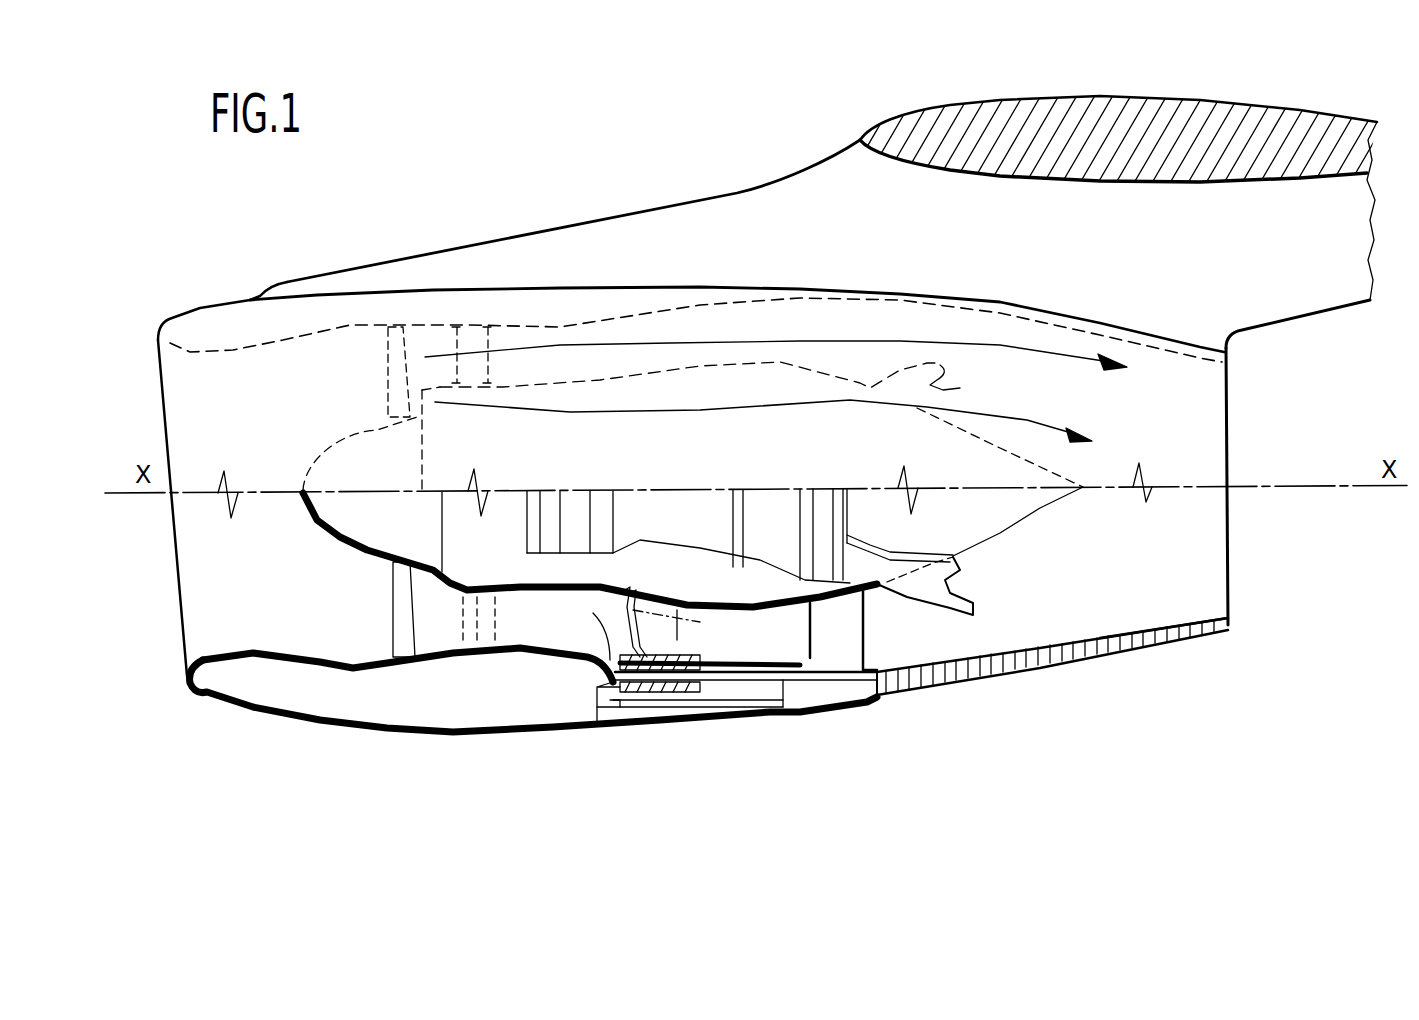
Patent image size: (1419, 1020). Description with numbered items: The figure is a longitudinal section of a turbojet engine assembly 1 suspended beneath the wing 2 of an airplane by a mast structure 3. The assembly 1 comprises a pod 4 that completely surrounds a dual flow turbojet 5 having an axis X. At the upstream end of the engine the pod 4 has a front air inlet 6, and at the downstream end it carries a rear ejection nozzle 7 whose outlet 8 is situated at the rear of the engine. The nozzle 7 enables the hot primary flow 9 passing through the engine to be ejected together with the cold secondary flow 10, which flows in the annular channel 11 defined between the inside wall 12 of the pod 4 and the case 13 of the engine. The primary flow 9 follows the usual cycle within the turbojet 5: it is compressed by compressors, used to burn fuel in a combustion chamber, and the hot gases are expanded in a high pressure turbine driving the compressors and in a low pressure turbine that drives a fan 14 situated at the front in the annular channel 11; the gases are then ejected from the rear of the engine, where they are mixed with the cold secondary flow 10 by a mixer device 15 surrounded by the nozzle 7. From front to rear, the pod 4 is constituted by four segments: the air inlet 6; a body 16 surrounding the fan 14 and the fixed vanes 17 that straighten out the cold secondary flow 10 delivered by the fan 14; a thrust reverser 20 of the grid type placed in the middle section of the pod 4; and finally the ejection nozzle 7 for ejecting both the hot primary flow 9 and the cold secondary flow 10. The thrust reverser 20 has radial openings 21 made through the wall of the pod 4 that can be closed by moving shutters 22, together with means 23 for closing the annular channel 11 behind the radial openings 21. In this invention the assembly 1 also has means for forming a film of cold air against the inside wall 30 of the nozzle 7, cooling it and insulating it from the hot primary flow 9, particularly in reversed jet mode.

The turbojet engine assembly 1 is at (230, 750).
The wing 2 is at (1133, 128).
The mast structure 3 is at (737, 212).
The pod 4 is at (468, 735).
The dual flow turbojet 5 is at (345, 437).
The front air inlet 6 is at (167, 570).
The rear ejection nozzle 7 is at (1095, 657).
The outlet 8 is at (1242, 570).
The hot primary flow 9 is at (562, 412).
The cold secondary flow 10 is at (1060, 350).
The annular channel 11 is at (358, 378).
The inside wall 12 is at (293, 652).
The case 13 is at (776, 369).
The fan 14 is at (403, 600).
The mixer device 15 is at (942, 370).
The body 16 is at (548, 737).
The fixed vanes 17 is at (468, 347).
The thrust reverser 20 is at (732, 738).
The radial openings 21 is at (653, 727).
The moving shutters 22 is at (712, 720).
The means for closing the annular channel 23 is at (700, 632).
The inside wall of the nozzle 30 is at (1148, 622).